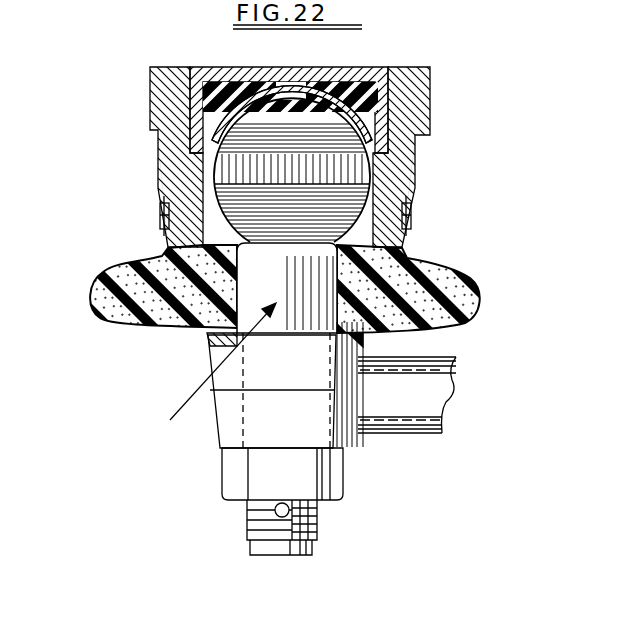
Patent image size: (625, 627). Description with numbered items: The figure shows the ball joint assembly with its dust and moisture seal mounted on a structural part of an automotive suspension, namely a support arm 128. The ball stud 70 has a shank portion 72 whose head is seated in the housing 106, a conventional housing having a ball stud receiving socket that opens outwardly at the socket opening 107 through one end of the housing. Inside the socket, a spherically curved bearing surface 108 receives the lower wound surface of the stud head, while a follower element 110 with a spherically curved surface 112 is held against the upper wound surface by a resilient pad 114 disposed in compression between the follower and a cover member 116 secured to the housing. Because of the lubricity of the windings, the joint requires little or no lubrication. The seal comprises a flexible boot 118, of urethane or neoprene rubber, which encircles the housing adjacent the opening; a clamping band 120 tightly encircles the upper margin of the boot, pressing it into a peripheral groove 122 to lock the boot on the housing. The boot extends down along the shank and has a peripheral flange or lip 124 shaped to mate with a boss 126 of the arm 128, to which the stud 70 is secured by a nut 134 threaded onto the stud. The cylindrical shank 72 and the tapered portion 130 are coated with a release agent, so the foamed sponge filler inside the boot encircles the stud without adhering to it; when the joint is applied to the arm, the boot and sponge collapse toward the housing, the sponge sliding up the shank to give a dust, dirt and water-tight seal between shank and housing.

The ball stud 70 is at (202, 369).
The shank portion 72 is at (282, 292).
The housing 106 is at (413, 173).
The socket opening 107 is at (433, 263).
The spherically curved bearing surface 108 is at (372, 202).
The follower element 110 is at (405, 118).
The spherically curved surface 112 is at (215, 168).
The resilient pad 114 is at (216, 92).
The cover member 116 is at (353, 68).
The flexible boot 118 is at (113, 272).
The clamping band 120 is at (162, 223).
The peripheral groove 122 is at (410, 228).
The peripheral flange or lip 124 is at (363, 343).
The boss 126 is at (251, 386).
The arm 128 is at (432, 403).
The tapered portion 130 is at (263, 410).
The nut 134 is at (330, 483).